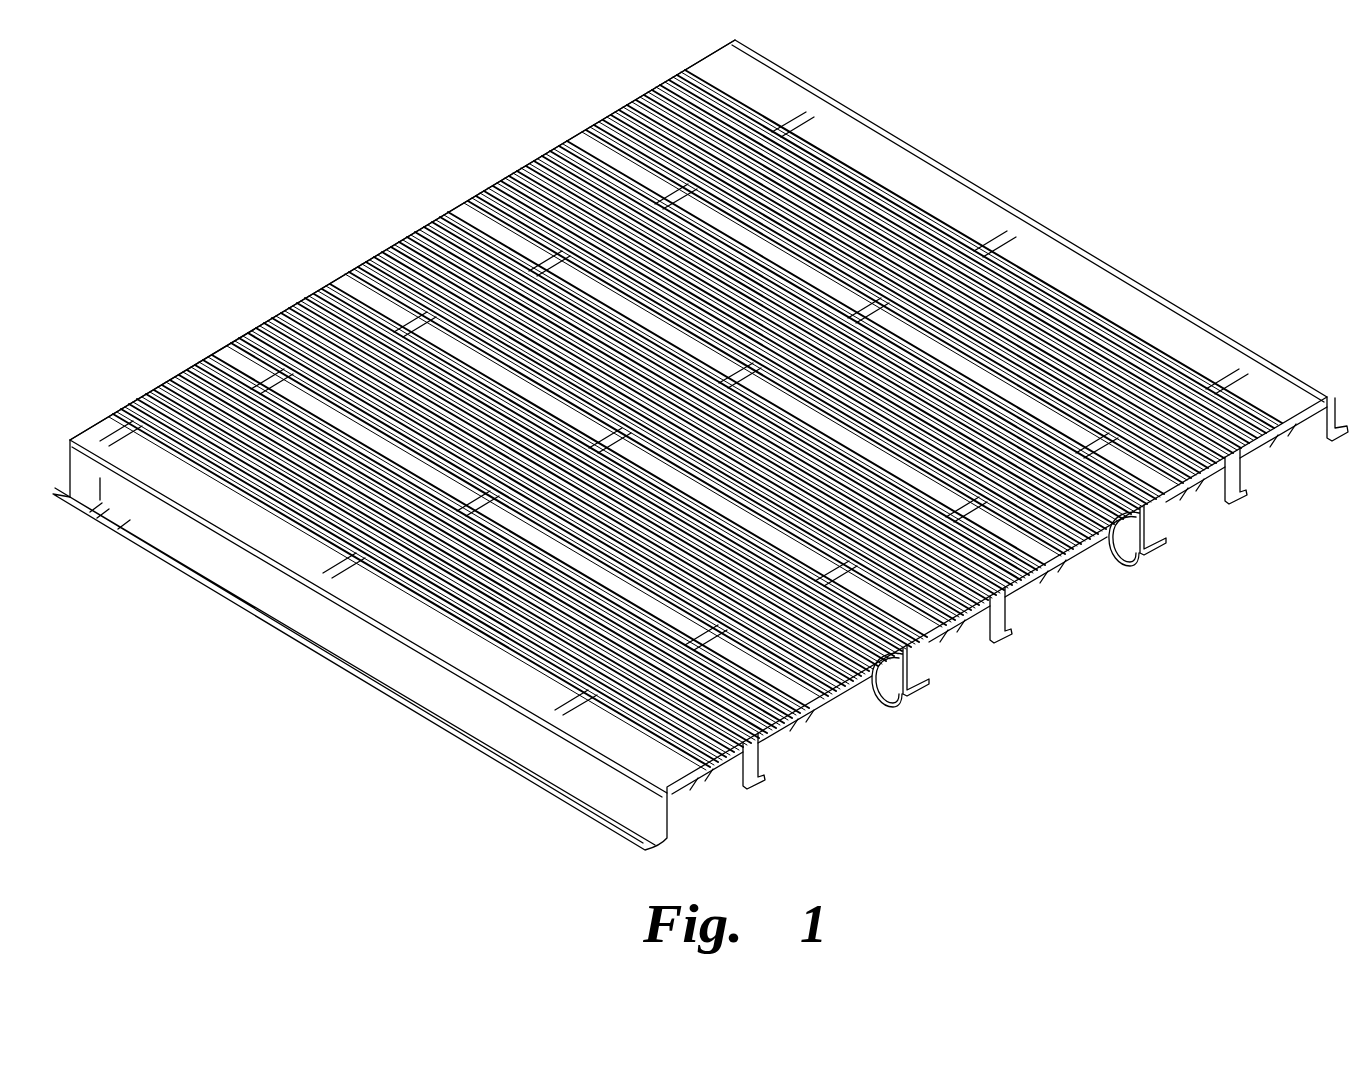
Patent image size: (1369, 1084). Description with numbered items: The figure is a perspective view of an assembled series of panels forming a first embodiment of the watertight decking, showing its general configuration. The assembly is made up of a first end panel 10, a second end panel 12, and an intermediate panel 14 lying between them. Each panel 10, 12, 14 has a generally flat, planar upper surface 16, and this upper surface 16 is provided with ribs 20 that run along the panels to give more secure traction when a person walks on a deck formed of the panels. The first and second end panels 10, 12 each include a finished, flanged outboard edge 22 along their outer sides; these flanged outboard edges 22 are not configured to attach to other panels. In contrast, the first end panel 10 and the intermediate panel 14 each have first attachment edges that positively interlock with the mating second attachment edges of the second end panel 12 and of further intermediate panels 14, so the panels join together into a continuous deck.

The first end panel 10 is at (232, 343).
The second end panel 12 is at (582, 127).
The intermediate panel 14 is at (343, 276).
The upper surface 16 is at (257, 510).
The ribs 20 is at (428, 216).
The flanged outboard edges 22 is at (1336, 400).